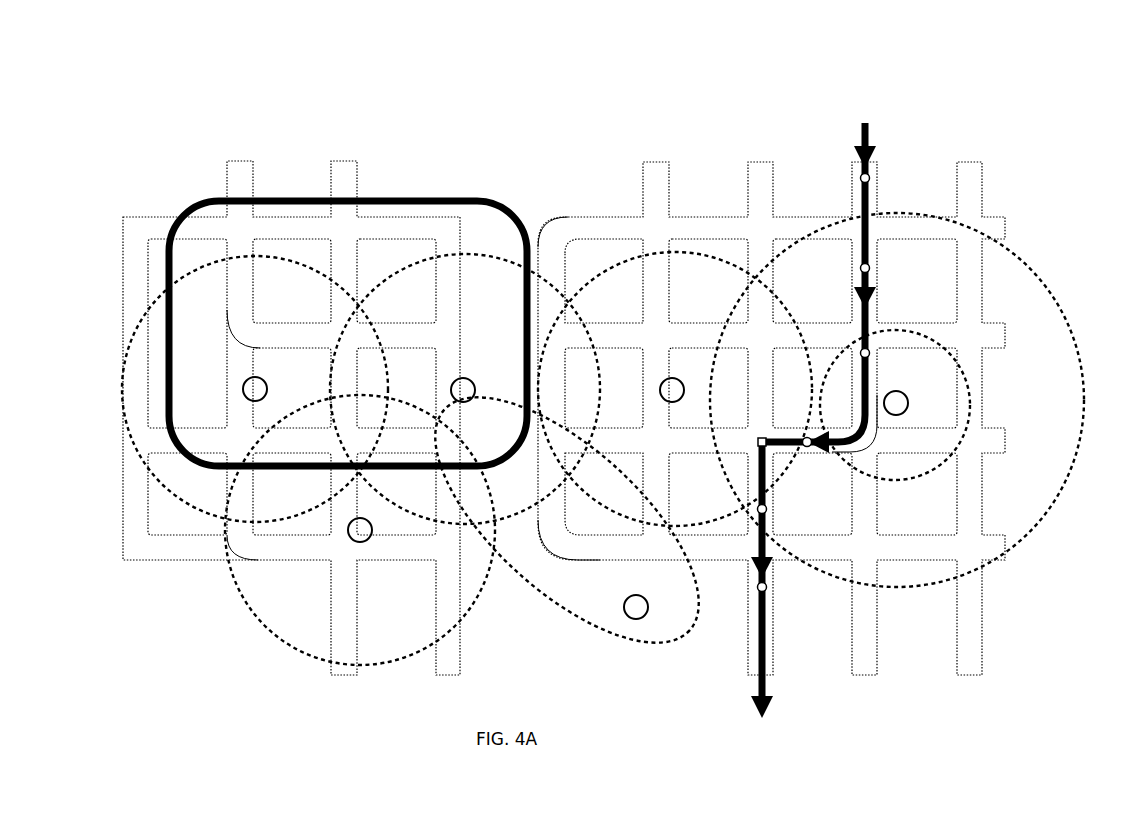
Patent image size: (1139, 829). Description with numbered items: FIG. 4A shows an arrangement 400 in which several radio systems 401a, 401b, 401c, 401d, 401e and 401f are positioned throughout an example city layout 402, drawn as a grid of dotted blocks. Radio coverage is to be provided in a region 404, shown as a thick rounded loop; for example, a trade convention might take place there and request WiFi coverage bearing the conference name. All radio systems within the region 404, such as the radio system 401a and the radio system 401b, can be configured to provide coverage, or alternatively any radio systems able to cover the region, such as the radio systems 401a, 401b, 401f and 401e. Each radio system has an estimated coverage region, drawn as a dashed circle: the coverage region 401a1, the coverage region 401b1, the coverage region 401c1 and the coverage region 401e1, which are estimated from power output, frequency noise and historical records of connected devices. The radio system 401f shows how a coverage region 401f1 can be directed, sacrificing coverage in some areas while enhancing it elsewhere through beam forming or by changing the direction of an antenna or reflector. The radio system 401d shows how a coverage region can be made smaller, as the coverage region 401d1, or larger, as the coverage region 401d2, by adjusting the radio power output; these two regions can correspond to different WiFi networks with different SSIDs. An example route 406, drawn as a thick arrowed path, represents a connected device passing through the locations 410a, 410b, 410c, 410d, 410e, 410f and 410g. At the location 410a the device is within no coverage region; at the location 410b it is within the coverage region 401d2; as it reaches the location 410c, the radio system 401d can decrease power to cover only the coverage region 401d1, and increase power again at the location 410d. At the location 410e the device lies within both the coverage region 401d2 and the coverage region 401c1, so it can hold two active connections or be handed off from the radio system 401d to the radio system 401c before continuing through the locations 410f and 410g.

The integrated circuit layout 400 is at (1063, 72).
The city layout 402 is at (983, 165).
The region 404 is at (443, 200).
The example route 406 is at (868, 124).
The radio system 401a is at (258, 386).
The radio system 401b is at (463, 388).
The radio system 401c is at (669, 388).
The radio system 401d is at (902, 405).
The radio system 401e is at (359, 540).
The radio system 401f is at (624, 600).
The coverage region 401a1 is at (187, 510).
The coverage region 401b1 is at (503, 260).
The coverage region 401c1 is at (695, 258).
The coverage region 401d1 is at (886, 480).
The coverage region 401d2 is at (1066, 343).
The coverage region 401e1 is at (272, 635).
The coverage region 401f1 is at (650, 652).
The location 410a is at (870, 179).
The location 410b is at (870, 269).
The location 410c is at (870, 354).
The location 410d is at (808, 448).
The location 410e is at (758, 439).
The location 410f is at (767, 510).
The location 410g is at (767, 588).